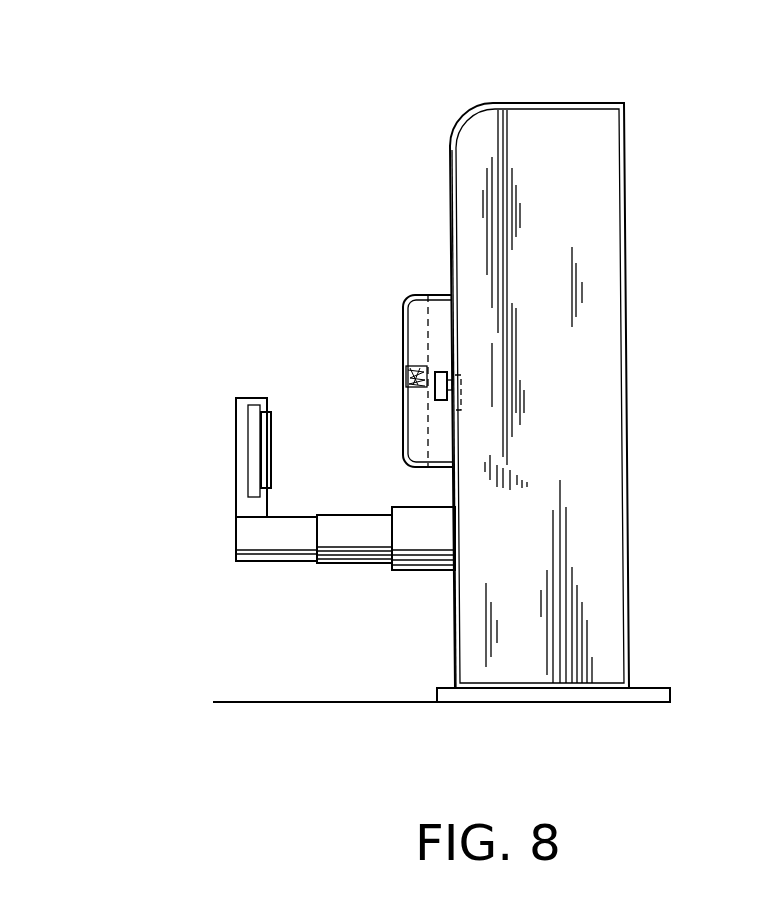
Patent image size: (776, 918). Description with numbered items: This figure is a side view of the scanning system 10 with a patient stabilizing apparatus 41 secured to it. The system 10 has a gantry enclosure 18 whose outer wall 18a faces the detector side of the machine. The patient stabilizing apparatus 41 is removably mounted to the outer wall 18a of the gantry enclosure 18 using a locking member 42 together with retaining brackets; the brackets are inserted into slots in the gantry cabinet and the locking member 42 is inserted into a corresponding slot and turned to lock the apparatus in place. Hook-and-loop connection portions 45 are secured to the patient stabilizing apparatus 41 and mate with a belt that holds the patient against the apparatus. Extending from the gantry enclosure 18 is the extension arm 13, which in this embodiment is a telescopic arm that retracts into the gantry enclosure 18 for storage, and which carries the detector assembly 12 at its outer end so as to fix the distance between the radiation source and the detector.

The system 10 is at (675, 152).
The gantry enclosure 18 is at (625, 291).
The outer wall 18a is at (452, 262).
The patient stabilizing apparatus 41 is at (404, 319).
The locking member 42 is at (462, 391).
The VELCRO connection portions 45 is at (408, 381).
The detector assembly 12 is at (236, 453).
The extension arm 13 is at (286, 562).